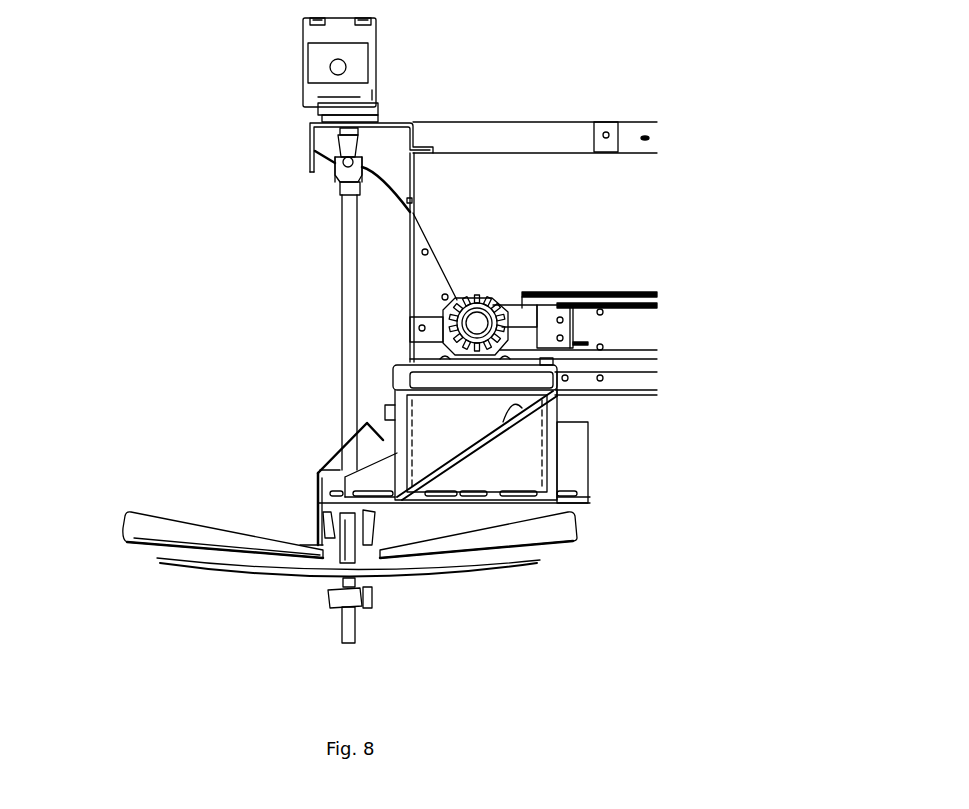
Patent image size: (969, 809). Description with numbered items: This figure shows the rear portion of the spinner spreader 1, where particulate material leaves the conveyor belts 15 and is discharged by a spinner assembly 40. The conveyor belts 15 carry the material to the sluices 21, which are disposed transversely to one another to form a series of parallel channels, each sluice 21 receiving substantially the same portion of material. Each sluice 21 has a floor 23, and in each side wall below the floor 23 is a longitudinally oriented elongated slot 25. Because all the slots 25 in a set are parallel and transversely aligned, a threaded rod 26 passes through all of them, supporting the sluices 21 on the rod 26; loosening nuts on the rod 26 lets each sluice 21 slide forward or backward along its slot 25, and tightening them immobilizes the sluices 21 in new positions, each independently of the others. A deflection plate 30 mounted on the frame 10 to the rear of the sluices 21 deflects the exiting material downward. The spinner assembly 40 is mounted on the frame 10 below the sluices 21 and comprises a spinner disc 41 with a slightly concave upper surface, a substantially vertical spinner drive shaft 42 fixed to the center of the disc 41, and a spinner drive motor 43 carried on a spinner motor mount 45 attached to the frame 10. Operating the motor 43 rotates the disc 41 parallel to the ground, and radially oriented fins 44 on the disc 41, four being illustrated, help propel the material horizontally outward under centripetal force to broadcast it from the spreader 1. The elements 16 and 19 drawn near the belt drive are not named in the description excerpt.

The spinner spreader 1 is at (147, 233).
The frame 10 is at (630, 380).
The conveyor belts 15 is at (560, 302).
The hub 16 is at (487, 302).
The gear wheel 19 is at (476, 322).
The sluices 21 is at (417, 422).
The floor 23 is at (533, 407).
The elongated slot 25 is at (498, 493).
The threaded rod 26 is at (460, 492).
The deflection plates 30 is at (336, 456).
The spinner assemblies 40 is at (290, 612).
The spinner disc 41 is at (217, 572).
The spinner drive shaft 42 is at (347, 241).
The spinner drive motor 43 is at (318, 37).
The fins 44 is at (157, 523).
The spinner motor mount 45 is at (310, 137).